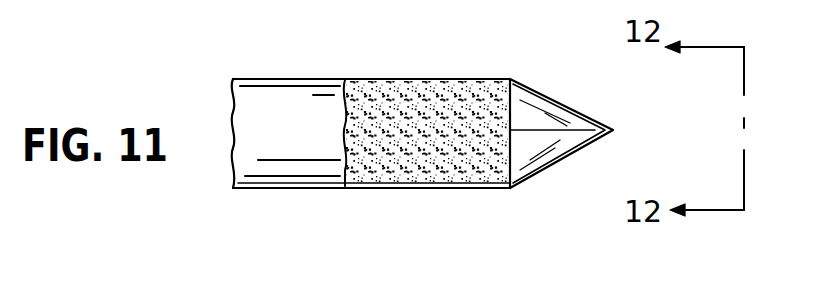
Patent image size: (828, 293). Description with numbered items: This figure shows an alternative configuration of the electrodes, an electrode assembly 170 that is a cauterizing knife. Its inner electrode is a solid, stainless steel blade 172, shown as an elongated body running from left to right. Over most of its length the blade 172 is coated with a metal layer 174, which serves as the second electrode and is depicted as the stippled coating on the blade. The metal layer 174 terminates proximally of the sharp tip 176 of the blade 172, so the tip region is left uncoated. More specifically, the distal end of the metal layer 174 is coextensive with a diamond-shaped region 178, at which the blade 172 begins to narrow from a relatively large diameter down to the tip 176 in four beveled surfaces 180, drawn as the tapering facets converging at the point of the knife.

The electrode assembly 170 is at (396, 49).
The blade 172 is at (278, 172).
The metal layer 174 is at (427, 183).
The sharp tip 176 is at (613, 130).
The diamond-shaped region 178 is at (527, 86).
The beveled surfaces 180 is at (560, 108).